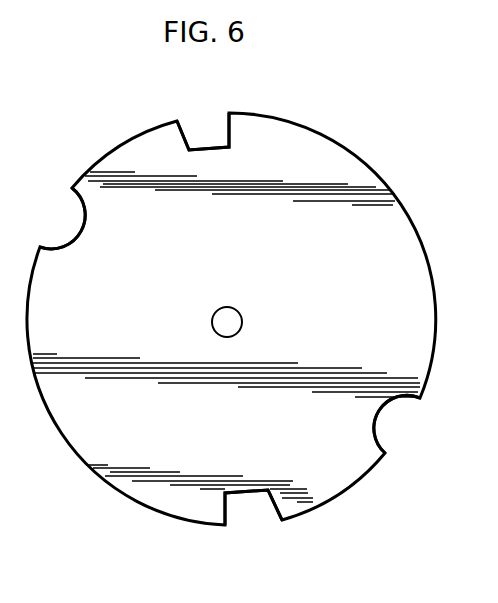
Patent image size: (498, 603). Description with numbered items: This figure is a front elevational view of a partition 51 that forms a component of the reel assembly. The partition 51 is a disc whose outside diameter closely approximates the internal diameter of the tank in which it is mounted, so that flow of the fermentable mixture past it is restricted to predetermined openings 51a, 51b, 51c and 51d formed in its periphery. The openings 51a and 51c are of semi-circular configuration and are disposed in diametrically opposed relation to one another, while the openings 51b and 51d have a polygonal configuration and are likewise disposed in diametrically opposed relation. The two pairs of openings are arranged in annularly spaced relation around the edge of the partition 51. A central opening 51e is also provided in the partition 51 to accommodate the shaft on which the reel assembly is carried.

The partition 51 is at (322, 164).
The opening 51a is at (72, 233).
The opening 51b is at (197, 140).
The opening 51c is at (390, 420).
The opening 51d is at (243, 503).
The central opening 51e is at (233, 317).